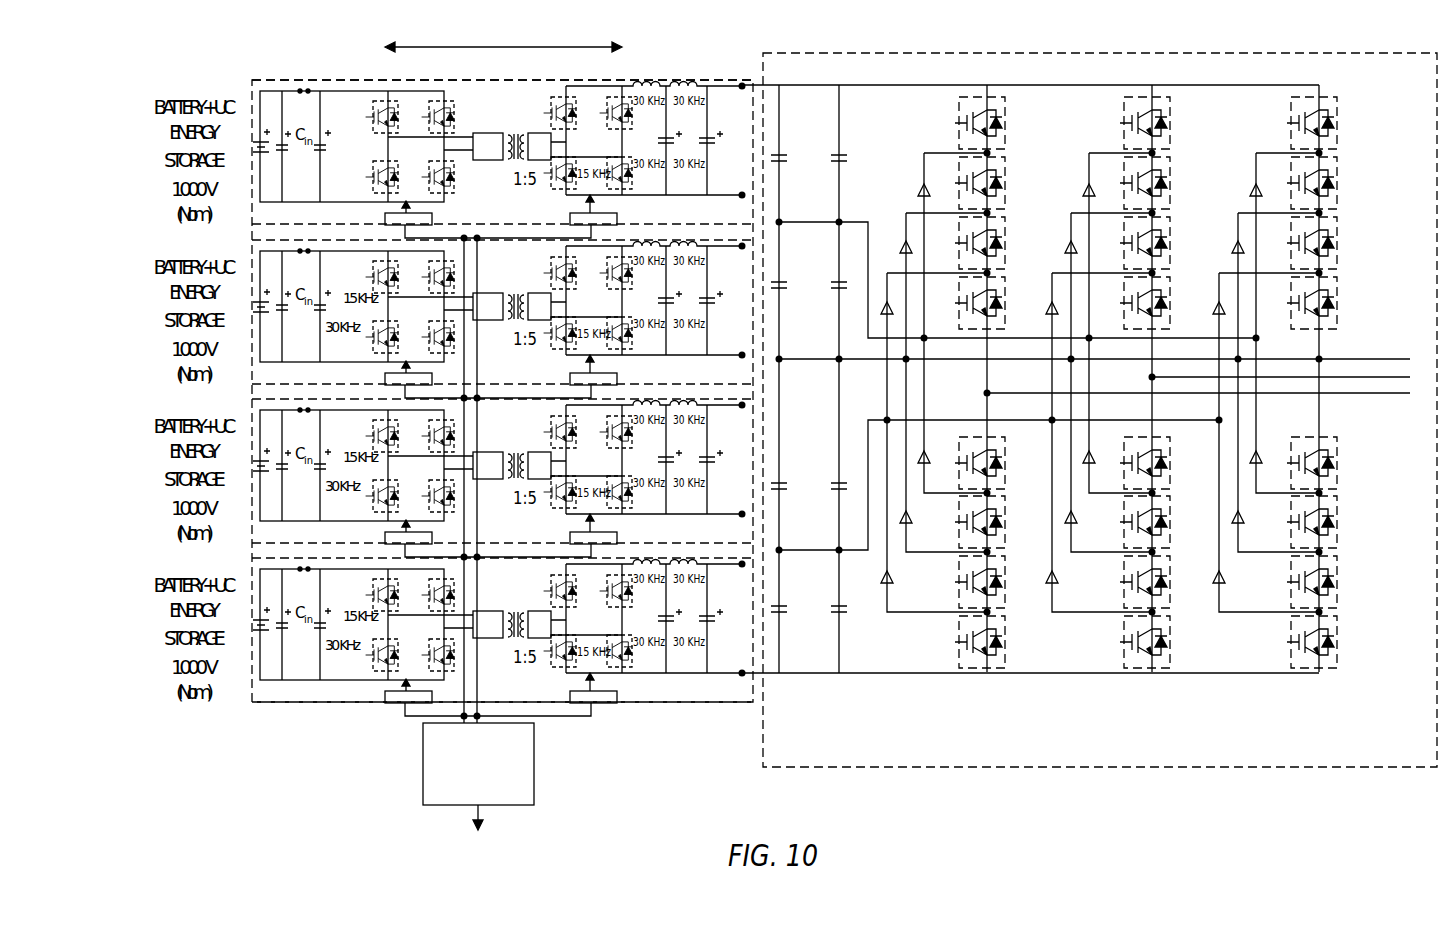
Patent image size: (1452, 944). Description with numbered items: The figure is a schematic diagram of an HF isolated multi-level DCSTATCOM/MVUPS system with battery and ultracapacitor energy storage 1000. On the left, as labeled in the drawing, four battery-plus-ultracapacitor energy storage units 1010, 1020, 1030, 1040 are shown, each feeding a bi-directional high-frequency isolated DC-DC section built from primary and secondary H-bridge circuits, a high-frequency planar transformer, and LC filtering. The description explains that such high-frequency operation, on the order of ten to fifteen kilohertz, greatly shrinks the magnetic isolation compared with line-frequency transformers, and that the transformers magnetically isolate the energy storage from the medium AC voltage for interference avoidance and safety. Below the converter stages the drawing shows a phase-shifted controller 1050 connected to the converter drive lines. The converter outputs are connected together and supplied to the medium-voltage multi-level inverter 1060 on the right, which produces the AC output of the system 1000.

The HF isolated multi-level DCSTATCOM/MVUPS system with battery and UC energy storag 1000 is at (300, 849).
The battery+UC energy storage module (first) 1010 is at (251, 97).
The battery+UC energy storage module (second) 1020 is at (250, 264).
The battery+UC energy storage module (third) 1030 is at (250, 424).
The battery+UC energy storage module (fourth) 1040 is at (250, 582).
The phase-shifted ZVS controller 1050 is at (426, 766).
The 5 level diode-clamped MV inverter 1060 is at (925, 52).